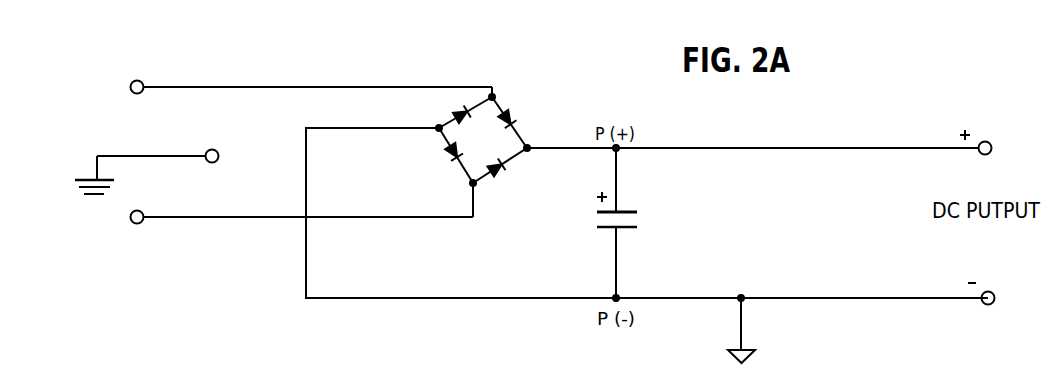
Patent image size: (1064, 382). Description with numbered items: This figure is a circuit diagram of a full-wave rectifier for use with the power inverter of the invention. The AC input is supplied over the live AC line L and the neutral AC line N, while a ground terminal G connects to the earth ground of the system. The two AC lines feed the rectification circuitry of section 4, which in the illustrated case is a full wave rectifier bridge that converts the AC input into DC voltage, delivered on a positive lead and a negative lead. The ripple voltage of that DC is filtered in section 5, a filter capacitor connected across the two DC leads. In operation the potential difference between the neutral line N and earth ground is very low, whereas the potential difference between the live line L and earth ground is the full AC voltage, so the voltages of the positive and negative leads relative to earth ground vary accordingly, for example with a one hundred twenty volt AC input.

The rectification circuitry section 4 is at (529, 130).
The ripple filtering section 5 is at (592, 223).
The live AC line L is at (299, 76).
The neutral AC line N is at (302, 203).
The ground terminal G is at (147, 161).